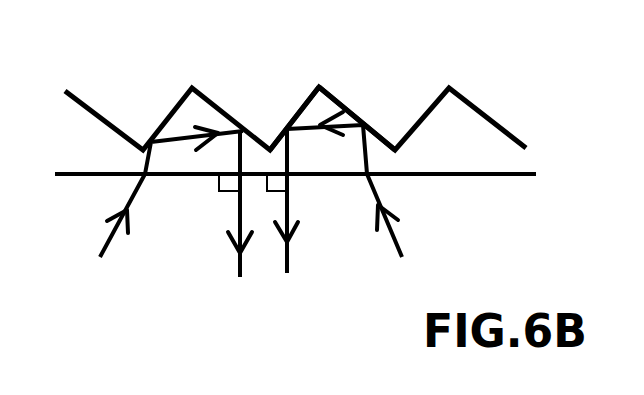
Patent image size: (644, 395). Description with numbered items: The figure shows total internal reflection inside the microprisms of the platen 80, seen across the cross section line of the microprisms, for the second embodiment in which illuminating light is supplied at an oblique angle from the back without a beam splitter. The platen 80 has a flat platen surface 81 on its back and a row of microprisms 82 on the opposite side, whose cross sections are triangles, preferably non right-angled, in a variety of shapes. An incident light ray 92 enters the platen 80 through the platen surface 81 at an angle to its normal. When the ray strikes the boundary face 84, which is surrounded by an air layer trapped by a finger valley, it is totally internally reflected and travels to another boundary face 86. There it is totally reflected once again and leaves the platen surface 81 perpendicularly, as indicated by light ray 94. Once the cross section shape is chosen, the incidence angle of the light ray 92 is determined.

The platen 80 is at (93, 156).
The platen surface 81 is at (453, 177).
The prismatic zigzag surface 82 is at (475, 143).
The boundary face 84 is at (350, 107).
The boundary face 86 is at (292, 113).
The incident light ray 92 is at (393, 232).
The light ray 94 is at (290, 185).